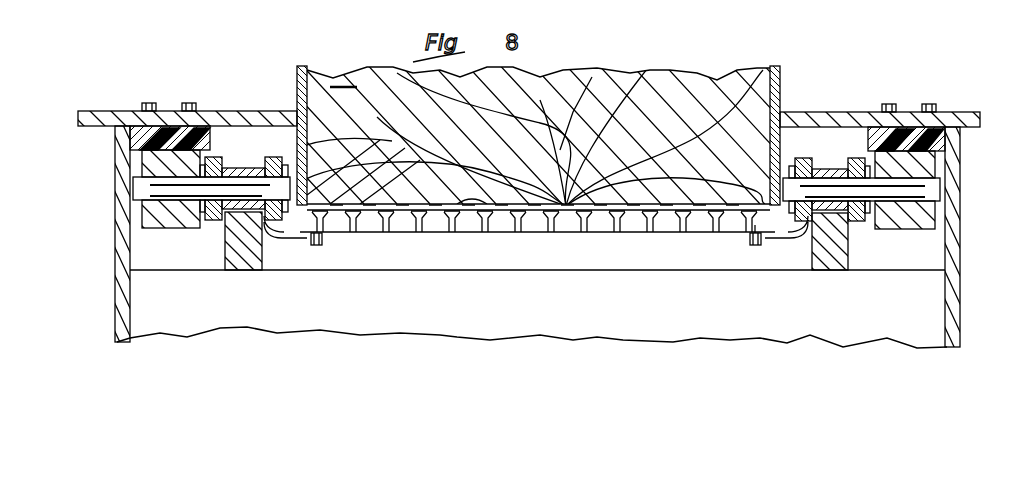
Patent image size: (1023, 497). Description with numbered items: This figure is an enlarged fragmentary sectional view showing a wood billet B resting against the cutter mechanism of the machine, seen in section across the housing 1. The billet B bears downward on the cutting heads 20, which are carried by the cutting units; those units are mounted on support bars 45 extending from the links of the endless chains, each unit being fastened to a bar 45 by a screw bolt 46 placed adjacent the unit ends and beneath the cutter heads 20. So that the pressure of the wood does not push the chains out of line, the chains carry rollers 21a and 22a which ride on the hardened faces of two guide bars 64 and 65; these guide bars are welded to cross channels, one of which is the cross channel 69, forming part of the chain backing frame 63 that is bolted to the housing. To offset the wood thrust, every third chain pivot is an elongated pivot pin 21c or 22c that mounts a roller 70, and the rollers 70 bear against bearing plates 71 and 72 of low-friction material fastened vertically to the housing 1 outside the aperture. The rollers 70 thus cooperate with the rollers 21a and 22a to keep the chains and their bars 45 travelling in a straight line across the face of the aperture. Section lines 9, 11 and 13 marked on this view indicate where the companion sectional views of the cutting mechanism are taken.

The housing 1 is at (253, 108).
The section line 9- 9 is at (302, 43).
The section line 11- 11 is at (768, 43).
The section line 13- 13 is at (782, 133).
The cutting heads 20 is at (563, 208).
The rollers 21a is at (228, 208).
The elongated pivot pin 21c is at (246, 188).
The rollers 22a is at (849, 224).
The elongated pivot pin 22c is at (824, 188).
The support bars 45 is at (304, 238).
The screw bolts 46 is at (745, 238).
The chain backing frame 63 is at (466, 252).
The guide bar 64 is at (230, 262).
The guide bar 65 is at (846, 261).
The cross channel 69 is at (598, 306).
The roller 70 is at (178, 222).
The bearing plate 71 is at (118, 143).
The bearing plate 72 is at (878, 143).
The wood billet B is at (655, 70).